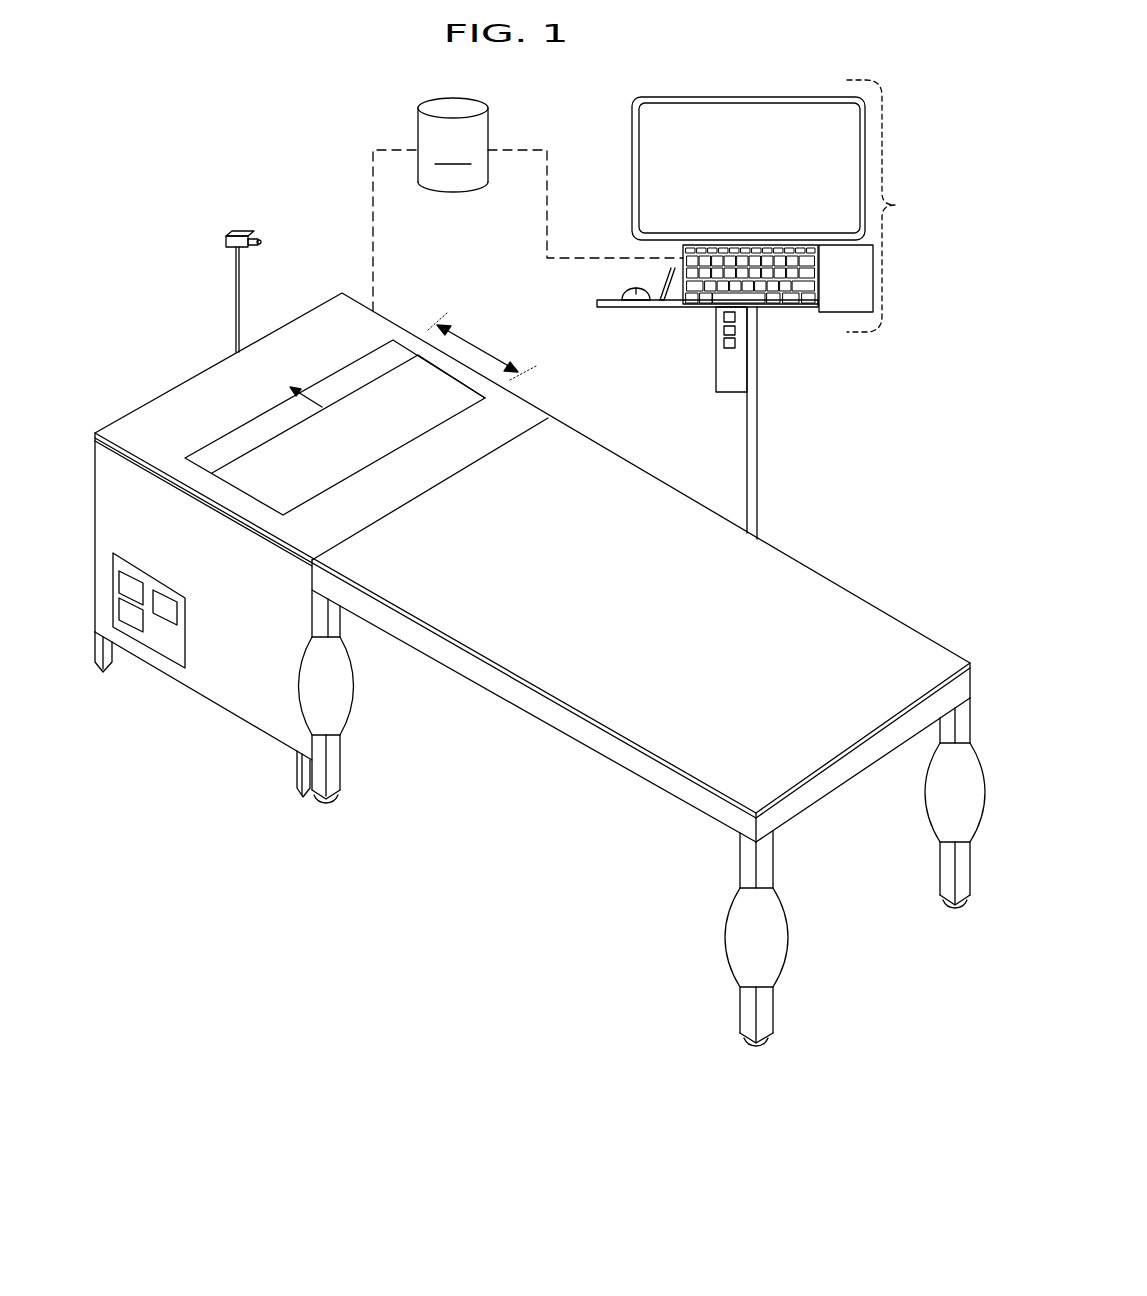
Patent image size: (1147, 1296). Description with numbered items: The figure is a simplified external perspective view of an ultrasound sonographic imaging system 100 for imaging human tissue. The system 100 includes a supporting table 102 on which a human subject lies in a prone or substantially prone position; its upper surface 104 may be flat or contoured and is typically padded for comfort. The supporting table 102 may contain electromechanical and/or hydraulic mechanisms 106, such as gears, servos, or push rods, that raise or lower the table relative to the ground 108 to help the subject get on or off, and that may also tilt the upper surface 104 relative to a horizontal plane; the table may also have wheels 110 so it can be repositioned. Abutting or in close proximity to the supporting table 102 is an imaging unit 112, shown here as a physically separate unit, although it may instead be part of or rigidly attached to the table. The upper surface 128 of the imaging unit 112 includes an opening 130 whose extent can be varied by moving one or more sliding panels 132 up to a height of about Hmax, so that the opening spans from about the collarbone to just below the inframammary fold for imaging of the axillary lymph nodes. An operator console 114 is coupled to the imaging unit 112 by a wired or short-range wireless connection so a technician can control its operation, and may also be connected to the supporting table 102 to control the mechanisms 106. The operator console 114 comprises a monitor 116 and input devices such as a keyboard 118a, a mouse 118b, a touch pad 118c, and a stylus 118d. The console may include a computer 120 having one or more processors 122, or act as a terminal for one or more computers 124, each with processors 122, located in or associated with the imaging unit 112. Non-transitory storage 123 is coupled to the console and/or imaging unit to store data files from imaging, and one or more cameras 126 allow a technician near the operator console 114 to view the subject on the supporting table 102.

The ultrasound sonographic imaging system 100 is at (175, 283).
The supporting table 102 is at (833, 580).
The upper surface 104 is at (613, 500).
The electromechanical and/or hydraulic mechanisms 106 is at (345, 704).
The ground 108 is at (535, 855).
The wheels 110 is at (342, 803).
The imaging unit 112 is at (188, 378).
The operator console 114 is at (898, 206).
The monitor 116 is at (647, 133).
The keyboard 118a is at (785, 308).
The mouse 118b is at (620, 292).
The touch pad 118c is at (850, 298).
The stylus 118d is at (660, 277).
The computer 120 is at (727, 383).
The processors 122 is at (131, 610).
The non-transitory storage 123 is at (528, 204).
The computers 124 is at (163, 645).
The cameras 126 is at (232, 230).
The upper surface 128 is at (230, 385).
The opening 130 is at (367, 420).
The sliding panels 132 is at (240, 442).